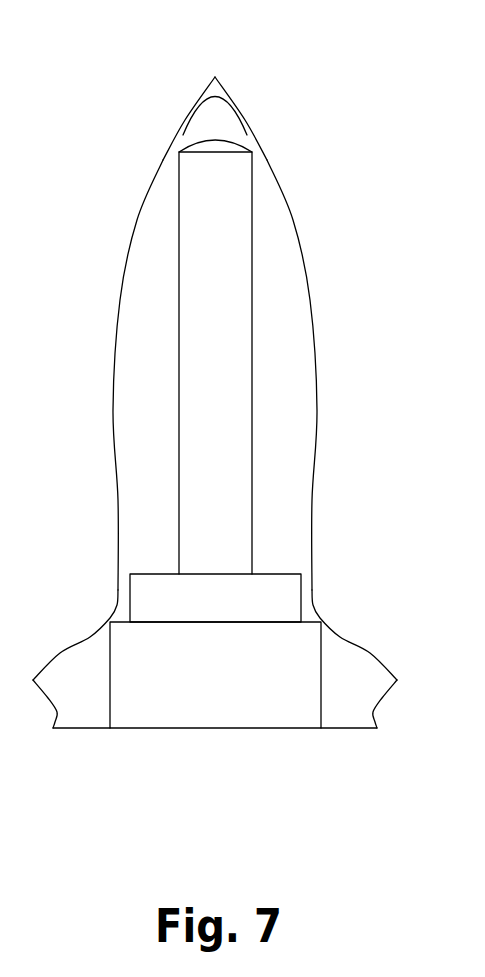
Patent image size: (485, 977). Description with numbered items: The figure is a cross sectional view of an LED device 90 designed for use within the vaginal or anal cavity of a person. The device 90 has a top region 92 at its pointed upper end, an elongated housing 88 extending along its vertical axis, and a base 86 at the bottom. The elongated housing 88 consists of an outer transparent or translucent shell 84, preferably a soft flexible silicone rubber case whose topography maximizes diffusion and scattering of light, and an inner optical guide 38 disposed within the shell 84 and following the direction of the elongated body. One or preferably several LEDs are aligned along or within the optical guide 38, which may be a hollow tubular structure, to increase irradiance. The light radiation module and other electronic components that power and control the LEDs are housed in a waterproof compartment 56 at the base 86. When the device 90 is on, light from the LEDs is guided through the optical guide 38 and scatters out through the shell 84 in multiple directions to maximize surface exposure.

The LED device 90 is at (155, 86).
The top region 92 is at (222, 89).
The outer transparent or translucent shell 84 is at (230, 379).
The elongated housing 88 is at (110, 418).
The optical guide 38 is at (252, 224).
The base 86 is at (381, 660).
The waterproof compartment 56 is at (141, 689).